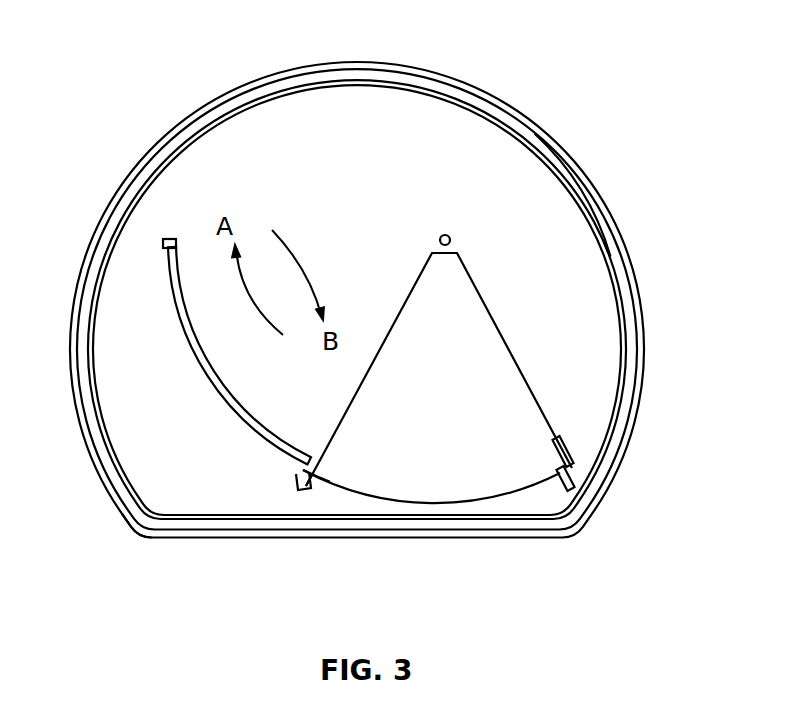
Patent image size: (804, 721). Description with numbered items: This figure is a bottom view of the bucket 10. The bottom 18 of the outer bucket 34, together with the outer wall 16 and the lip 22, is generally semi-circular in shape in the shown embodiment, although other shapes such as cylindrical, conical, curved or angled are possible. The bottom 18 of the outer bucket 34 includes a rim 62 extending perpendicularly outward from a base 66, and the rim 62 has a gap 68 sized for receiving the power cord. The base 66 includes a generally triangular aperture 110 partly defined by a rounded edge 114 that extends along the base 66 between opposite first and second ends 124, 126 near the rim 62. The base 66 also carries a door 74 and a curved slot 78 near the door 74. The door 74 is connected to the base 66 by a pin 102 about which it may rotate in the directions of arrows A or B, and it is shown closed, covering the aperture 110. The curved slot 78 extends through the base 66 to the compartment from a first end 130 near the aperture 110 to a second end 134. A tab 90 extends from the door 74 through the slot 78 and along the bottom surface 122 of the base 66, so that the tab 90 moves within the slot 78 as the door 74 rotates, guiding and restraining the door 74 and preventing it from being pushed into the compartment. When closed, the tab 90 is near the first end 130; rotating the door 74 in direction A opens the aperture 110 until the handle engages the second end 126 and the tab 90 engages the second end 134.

The bucket 10 is at (373, 292).
The outer wall 16 is at (633, 302).
The bottom 18 is at (368, 305).
The lip 22 is at (643, 342).
The outer bucket 34 is at (585, 175).
The rim 62 is at (152, 172).
The base 66 is at (387, 102).
The gap 68 is at (583, 487).
The door 74 is at (431, 533).
The curved slot 78 is at (230, 316).
The tab 90 is at (302, 490).
The pin 102 is at (448, 233).
The aperture 110 is at (430, 394).
The rounded edge 114 is at (497, 503).
The bottom surface 122 is at (153, 476).
The first end 124 is at (588, 467).
The second end 126 is at (318, 480).
The first end 130 is at (292, 468).
The second end 134 is at (168, 235).